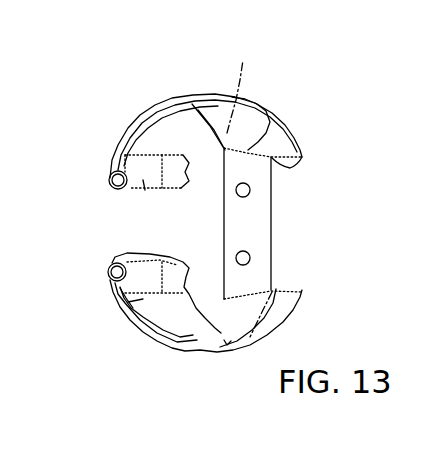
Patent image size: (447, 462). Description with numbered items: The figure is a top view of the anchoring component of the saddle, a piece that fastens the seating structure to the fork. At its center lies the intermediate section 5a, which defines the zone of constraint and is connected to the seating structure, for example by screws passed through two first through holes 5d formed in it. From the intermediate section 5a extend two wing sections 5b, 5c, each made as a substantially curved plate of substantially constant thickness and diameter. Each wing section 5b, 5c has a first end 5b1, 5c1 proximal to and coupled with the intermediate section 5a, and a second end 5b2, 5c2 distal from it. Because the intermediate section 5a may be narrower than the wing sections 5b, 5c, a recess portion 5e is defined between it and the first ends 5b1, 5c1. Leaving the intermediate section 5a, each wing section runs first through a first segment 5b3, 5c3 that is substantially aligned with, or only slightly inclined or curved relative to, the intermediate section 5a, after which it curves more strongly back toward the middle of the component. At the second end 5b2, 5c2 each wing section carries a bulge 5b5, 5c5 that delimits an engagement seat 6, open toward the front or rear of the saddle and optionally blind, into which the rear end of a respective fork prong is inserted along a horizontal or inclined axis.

The intermediate section 5a is at (293, 223).
The wing section 5b is at (204, 330).
The first end 5b1 is at (303, 318).
The second end 5b2 is at (95, 321).
The first segment 5b3 is at (229, 364).
The bulge 5b5 is at (165, 252).
The wing section 5c is at (206, 102).
The first end 5c1 is at (286, 108).
The second end 5c2 is at (173, 122).
The first segment 5c3 is at (247, 79).
The bulge 5c5 is at (132, 197).
The first through holes 5d is at (300, 228).
The recess portion 5e is at (321, 146).
The engagement seat 6 is at (87, 224).